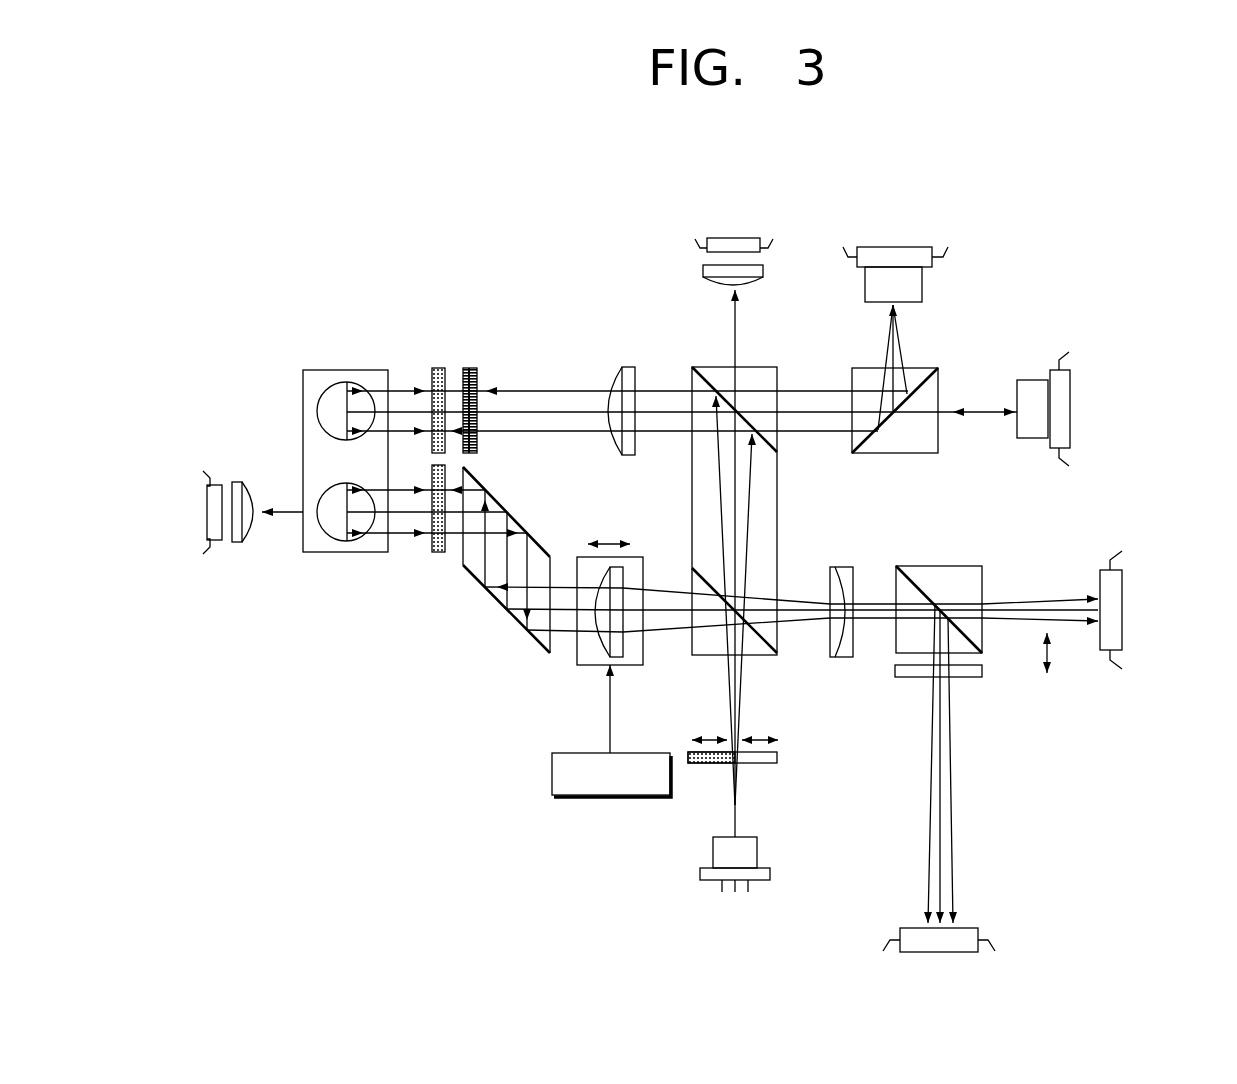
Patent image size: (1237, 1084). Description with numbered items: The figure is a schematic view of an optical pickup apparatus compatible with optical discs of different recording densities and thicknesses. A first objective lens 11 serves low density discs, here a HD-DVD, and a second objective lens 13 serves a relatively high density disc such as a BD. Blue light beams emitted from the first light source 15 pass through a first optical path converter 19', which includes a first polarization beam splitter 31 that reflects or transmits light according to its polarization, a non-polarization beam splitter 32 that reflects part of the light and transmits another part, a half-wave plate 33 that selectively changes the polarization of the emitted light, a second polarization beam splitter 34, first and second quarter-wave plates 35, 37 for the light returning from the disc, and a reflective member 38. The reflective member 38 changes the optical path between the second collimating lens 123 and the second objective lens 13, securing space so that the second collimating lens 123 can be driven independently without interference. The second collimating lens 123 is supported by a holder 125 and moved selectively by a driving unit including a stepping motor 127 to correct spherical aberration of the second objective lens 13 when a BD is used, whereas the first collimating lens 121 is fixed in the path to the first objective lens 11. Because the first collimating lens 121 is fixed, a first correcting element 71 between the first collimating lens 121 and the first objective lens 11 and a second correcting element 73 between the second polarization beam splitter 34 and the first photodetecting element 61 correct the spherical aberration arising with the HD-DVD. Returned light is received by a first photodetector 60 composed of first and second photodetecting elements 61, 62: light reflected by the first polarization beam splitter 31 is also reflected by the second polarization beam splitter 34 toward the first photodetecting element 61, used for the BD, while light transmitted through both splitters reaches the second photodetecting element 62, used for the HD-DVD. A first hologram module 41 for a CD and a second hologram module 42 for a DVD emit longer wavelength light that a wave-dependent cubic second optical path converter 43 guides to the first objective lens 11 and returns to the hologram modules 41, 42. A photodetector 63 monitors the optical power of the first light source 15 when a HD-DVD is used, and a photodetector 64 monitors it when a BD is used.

The first objective lens 11 is at (320, 405).
The second objective lens 13 is at (327, 541).
The first light source 15 is at (757, 855).
The first optical path converter 19' is at (769, 511).
The polarization beam splitter 31 is at (768, 640).
The non-polarization beam splitter 32 is at (770, 437).
The half-wave plate 33 is at (777, 757).
The second polarization beam splitter 34 is at (982, 575).
The first quarter-wave plate 35 is at (438, 368).
The second quarter-wave plate 37 is at (438, 553).
The reflective member 38 is at (495, 602).
The first hologram module 41 is at (922, 280).
The second hologram module 42 is at (1070, 433).
The second optical path converter 43 is at (938, 380).
The first photodetector 60 is at (1099, 777).
The first photodetecting element 61 is at (960, 928).
The second photodetecting element 62 is at (1122, 640).
The photodetector 63 is at (733, 238).
The photodetector 64 is at (207, 507).
The first correcting element 71 is at (470, 368).
The second correcting element 73 is at (982, 672).
The first collimating lens 121 is at (626, 367).
The second collimating lens 123 is at (597, 638).
The holder 125 is at (585, 667).
The stepping motor 127 is at (610, 797).